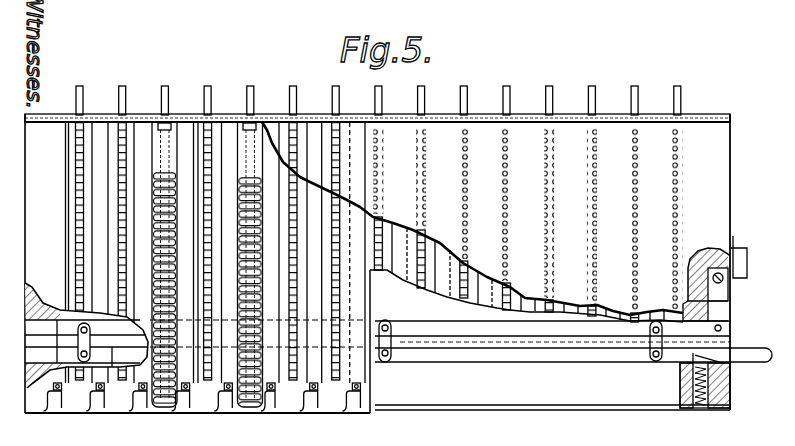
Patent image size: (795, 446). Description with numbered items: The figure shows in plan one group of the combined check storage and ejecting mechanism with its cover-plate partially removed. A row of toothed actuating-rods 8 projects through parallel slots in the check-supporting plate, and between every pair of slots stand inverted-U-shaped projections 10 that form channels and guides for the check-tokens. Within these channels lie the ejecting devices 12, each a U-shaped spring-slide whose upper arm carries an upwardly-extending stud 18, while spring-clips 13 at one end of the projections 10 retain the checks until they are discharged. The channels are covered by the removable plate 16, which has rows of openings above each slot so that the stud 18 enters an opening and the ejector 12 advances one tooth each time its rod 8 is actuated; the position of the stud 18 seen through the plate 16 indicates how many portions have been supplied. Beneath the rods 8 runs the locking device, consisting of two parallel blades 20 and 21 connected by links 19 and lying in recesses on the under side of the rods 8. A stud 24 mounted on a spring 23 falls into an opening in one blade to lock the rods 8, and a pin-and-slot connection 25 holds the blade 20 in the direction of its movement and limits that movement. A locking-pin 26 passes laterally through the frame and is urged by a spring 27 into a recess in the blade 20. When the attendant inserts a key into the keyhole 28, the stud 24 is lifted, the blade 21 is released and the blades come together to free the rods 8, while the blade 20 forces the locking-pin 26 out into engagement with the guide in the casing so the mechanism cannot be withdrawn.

The toothed actuating-rod 8 is at (118, 98).
The inverted-U-shaped projection 10 is at (110, 258).
The ejecting device 12 is at (208, 264).
The spring-clip 13 is at (272, 393).
The removable plate 16 is at (531, 241).
The stud 18 is at (165, 128).
The link 19 is at (80, 342).
The blade 20 is at (573, 358).
The blade 21 is at (530, 330).
The spring 23 is at (722, 296).
The stud 24 is at (722, 328).
The pin-and-slot connection 25 is at (142, 366).
The locking-pin 26 is at (702, 408).
The spring 27 is at (732, 387).
The keyhole 28 is at (729, 310).